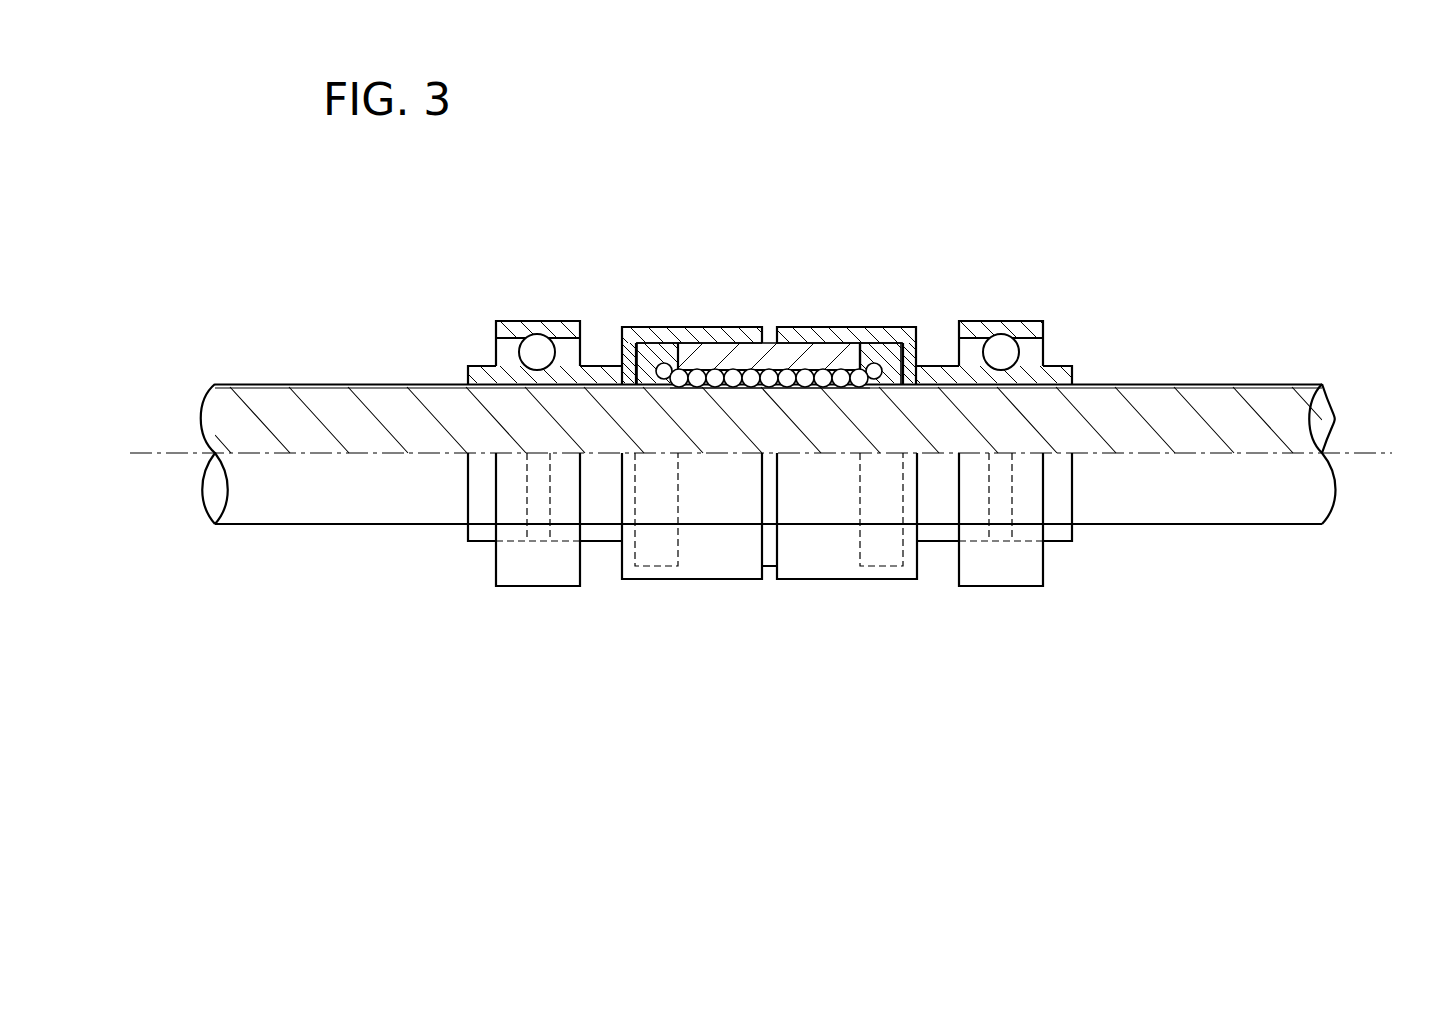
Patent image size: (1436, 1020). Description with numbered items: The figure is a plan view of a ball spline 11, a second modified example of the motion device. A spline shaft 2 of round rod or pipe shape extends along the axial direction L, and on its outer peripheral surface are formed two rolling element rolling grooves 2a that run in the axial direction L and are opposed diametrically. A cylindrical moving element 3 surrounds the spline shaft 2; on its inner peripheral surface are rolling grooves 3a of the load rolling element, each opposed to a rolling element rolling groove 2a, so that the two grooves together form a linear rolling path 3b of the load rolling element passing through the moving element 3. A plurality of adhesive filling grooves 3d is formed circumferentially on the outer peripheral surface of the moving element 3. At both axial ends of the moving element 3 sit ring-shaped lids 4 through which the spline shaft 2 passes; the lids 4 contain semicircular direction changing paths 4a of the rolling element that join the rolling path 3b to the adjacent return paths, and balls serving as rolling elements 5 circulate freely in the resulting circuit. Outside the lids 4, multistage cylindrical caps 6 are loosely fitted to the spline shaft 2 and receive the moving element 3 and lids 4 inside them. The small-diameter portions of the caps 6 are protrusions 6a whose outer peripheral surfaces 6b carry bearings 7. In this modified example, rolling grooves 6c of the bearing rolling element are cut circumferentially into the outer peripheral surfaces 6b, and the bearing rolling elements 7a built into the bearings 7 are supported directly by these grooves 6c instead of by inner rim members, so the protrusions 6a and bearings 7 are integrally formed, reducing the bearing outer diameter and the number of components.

The spline shaft 2 is at (292, 530).
The rolling element rolling groove 2a is at (323, 384).
The moving element 3 is at (768, 355).
The rolling groove of the load rolling element 3a is at (828, 390).
The rolling path of the load rolling element 3b is at (855, 362).
The adhesive filling groove 3d is at (735, 343).
The lid 4 is at (662, 342).
The direction changing path of the rolling element 4a is at (645, 346).
The rolling element 5 is at (735, 388).
The cap 6 is at (660, 586).
The protrusion 6a is at (598, 366).
The outer peripheral surface 6b is at (485, 366).
The rolling groove of the bearing rolling element 6c is at (537, 541).
The bearing 7 is at (540, 318).
The bearing rolling element 7a is at (530, 352).
The ball spline 11 is at (1191, 121).
The axial direction L is at (1383, 450).